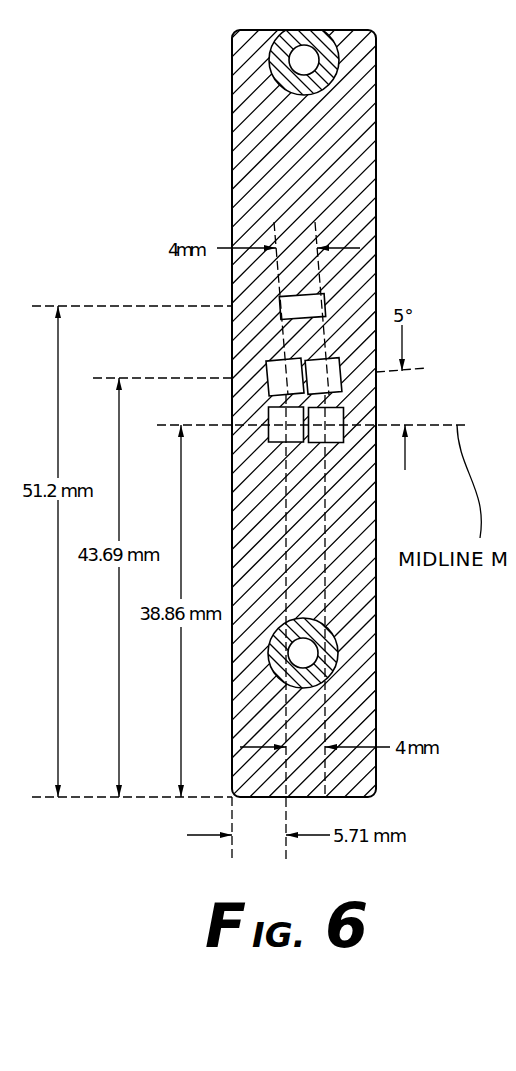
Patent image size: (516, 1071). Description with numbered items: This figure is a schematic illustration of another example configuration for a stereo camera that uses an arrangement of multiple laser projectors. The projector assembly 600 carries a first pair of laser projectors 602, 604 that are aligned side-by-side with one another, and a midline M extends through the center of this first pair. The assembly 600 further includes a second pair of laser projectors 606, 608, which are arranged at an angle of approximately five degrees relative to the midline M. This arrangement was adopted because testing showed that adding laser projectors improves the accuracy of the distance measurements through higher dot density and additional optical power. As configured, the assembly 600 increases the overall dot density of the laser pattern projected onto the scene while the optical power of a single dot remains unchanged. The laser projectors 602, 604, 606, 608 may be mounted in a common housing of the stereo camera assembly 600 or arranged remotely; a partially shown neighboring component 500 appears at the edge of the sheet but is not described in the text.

The projector assembly 600 is at (163, 145).
The laser projector 602 is at (278, 415).
The laser projector 604 is at (333, 433).
The laser projector 606 is at (275, 372).
The laser projector 608 is at (330, 383).
The adjacent component 500 is at (0, 220).